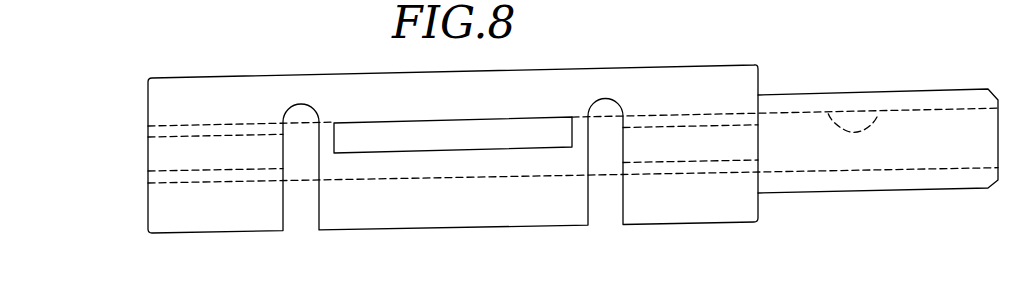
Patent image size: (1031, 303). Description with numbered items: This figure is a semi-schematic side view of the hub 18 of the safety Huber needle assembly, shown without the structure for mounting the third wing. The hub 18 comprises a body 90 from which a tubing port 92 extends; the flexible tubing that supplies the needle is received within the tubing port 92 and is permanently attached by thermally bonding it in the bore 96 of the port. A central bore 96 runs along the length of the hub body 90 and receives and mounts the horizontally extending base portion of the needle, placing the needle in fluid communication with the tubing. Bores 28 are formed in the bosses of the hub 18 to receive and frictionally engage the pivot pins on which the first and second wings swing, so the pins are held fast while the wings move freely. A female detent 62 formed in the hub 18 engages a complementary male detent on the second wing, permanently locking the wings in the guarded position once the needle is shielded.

The hub 18 is at (236, 45).
The bore 28 is at (185, 138).
The female detent 62 is at (387, 134).
The body 90 is at (677, 80).
The tubing port 92 is at (787, 93).
The central bore 96 is at (877, 117).